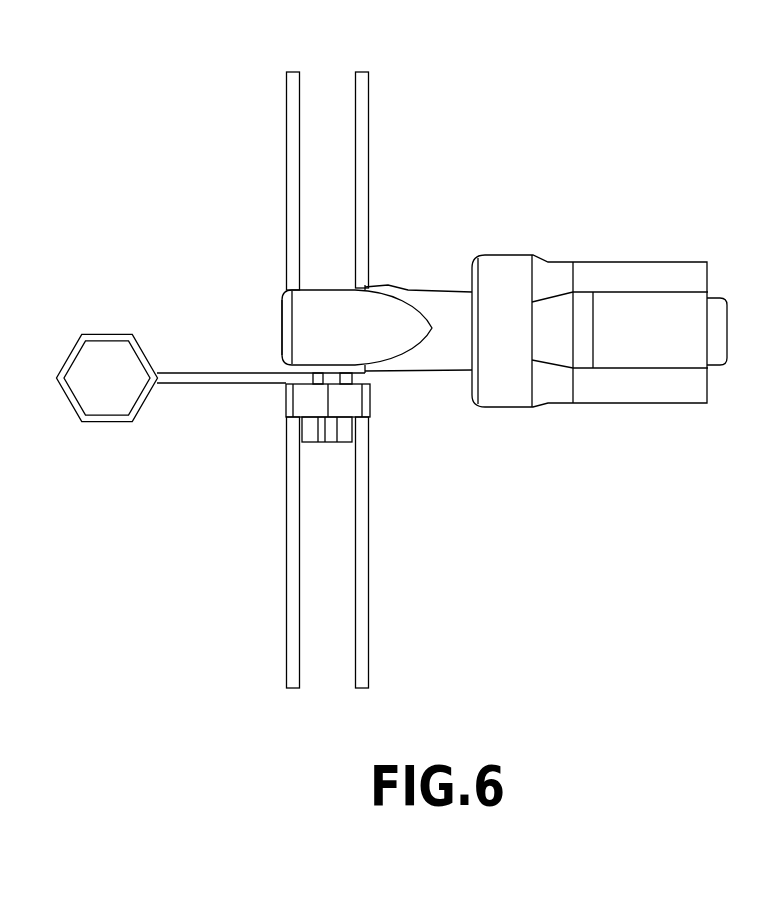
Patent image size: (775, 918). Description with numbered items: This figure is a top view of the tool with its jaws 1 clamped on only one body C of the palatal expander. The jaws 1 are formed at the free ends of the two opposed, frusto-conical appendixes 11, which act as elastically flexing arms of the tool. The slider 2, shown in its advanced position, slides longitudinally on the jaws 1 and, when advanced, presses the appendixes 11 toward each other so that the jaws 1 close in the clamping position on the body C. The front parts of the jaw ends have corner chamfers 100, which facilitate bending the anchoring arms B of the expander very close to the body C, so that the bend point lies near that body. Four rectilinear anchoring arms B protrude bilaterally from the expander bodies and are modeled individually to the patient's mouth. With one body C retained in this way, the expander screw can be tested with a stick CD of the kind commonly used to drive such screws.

The jaws 1 is at (347, 345).
The slider 2 is at (707, 252).
The appendixes 11 is at (430, 298).
The corner chamfers 100 is at (290, 292).
The anchoring arms B is at (292, 165).
The body of the palatal expander C is at (283, 408).
The stick CD is at (108, 428).